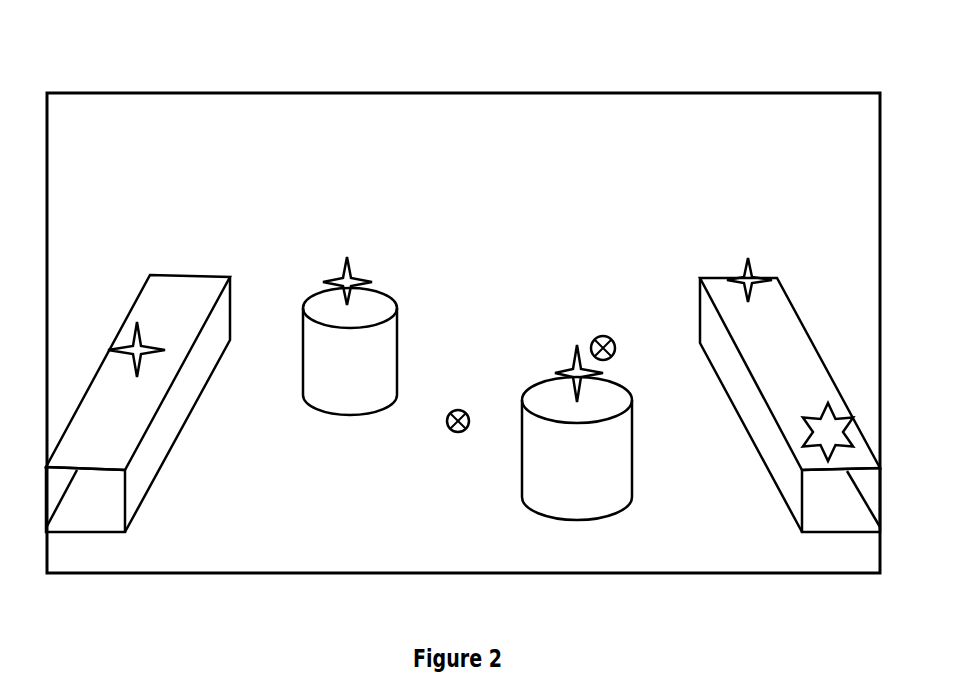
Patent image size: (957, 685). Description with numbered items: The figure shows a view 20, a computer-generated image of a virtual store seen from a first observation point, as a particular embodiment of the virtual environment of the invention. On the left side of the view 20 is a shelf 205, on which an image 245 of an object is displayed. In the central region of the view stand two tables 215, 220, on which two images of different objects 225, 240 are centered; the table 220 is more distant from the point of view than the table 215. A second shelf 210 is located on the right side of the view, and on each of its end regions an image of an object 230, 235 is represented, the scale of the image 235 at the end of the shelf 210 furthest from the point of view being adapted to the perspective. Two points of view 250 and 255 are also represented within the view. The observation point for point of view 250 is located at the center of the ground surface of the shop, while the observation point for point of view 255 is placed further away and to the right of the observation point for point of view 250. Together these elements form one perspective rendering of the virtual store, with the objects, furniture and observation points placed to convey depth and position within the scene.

The view 20 is at (218, 80).
The shelf 205 is at (130, 435).
The shelf 210 is at (732, 293).
The table 215 is at (541, 478).
The table 220 is at (333, 366).
The image of object 225 is at (553, 372).
The image of object 230 is at (815, 415).
The image of object 235 is at (745, 270).
The image of object 240 is at (340, 275).
The image of object 245 is at (117, 350).
The point of view 250 is at (446, 424).
The point of view 255 is at (595, 338).